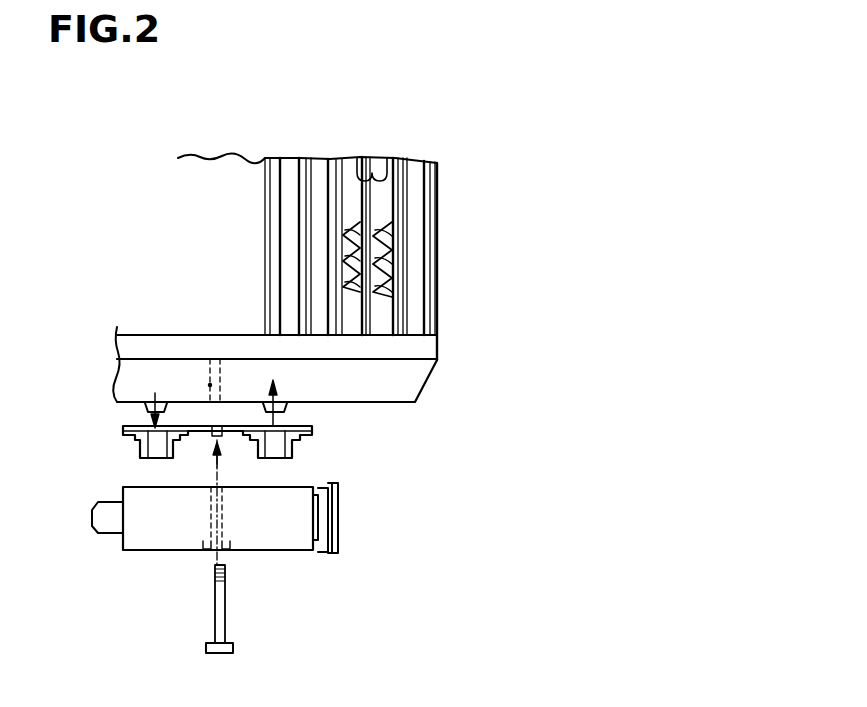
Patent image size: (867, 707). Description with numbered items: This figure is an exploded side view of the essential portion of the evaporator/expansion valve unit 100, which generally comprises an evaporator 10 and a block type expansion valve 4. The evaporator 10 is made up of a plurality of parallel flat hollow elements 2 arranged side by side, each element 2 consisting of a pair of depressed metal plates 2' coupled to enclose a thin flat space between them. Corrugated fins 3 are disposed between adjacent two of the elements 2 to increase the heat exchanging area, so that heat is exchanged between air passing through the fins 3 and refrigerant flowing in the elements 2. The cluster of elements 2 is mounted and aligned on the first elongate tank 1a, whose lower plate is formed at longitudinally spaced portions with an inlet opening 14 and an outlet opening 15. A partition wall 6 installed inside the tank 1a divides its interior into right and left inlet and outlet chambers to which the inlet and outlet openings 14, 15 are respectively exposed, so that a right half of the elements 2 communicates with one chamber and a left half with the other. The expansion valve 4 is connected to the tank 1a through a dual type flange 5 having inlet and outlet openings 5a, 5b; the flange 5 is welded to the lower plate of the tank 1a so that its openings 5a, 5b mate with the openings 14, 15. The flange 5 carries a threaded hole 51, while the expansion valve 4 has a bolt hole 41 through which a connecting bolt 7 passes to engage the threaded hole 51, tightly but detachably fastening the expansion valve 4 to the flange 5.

The evaporator/expansion valve unit 100 is at (496, 143).
The evaporator 10 is at (437, 222).
The flat hollow element 2 is at (344, 130).
The depressed metal plate 2' is at (349, 134).
The corrugated fin 3 is at (392, 253).
The first elongate tank 1a is at (427, 383).
The partition wall 6 is at (210, 386).
The outlet opening 15 is at (143, 408).
The inlet opening 14 is at (288, 412).
The flange 5 is at (239, 476).
The inlet opening of flange 5a is at (283, 456).
The outlet opening of flange 5b is at (160, 440).
The threaded hole 51 is at (210, 437).
The block type expansion valve 4 is at (283, 553).
The bolt hole 41 is at (213, 512).
The connecting bolt 7 is at (225, 625).